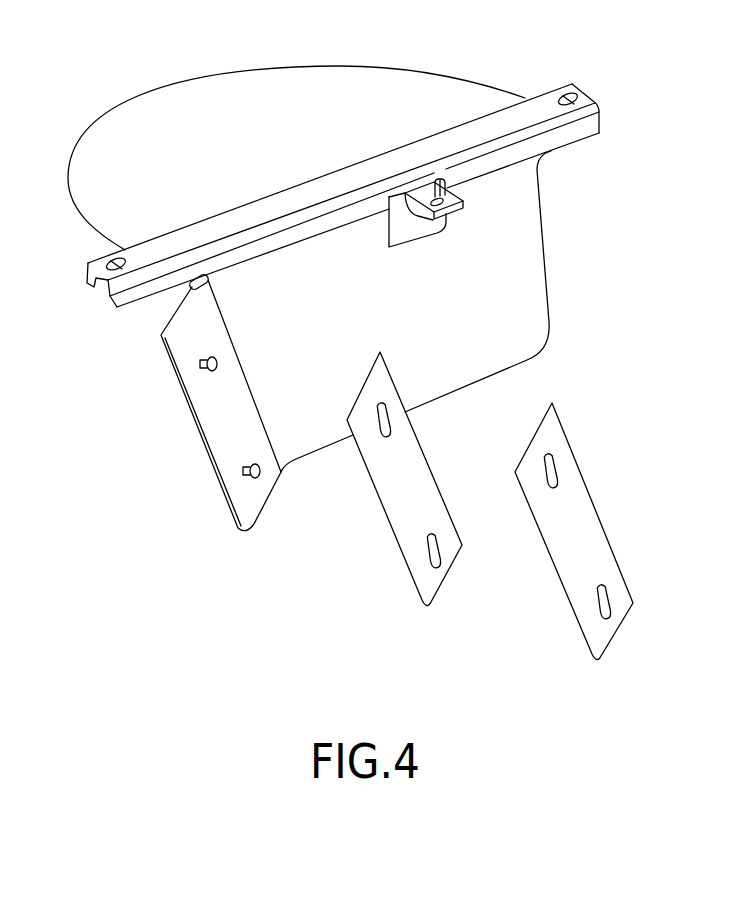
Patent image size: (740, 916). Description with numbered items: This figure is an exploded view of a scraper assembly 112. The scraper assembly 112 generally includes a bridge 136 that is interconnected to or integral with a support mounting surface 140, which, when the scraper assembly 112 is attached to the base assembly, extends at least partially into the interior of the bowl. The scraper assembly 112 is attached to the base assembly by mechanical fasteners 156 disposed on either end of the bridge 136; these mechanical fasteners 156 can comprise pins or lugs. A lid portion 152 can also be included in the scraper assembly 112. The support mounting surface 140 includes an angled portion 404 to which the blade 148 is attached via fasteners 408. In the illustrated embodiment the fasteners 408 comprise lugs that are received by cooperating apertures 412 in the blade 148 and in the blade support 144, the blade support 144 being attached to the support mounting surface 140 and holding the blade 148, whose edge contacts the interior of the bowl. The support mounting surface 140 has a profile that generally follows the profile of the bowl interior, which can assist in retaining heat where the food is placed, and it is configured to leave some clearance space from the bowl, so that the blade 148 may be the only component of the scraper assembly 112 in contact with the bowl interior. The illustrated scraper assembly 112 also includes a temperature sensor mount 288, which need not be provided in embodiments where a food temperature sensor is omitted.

The scraper assembly 112 is at (110, 81).
The lid portion 152 is at (387, 78).
The mechanical fasteners 156 is at (578, 97).
The bridge 136 is at (127, 255).
The temperature sensor mount 288 is at (463, 197).
The support mounting surface 140 is at (527, 268).
The angled portion 404 is at (215, 432).
The fasteners 408 is at (200, 363).
The blade 148 is at (397, 543).
The blade support 144 is at (578, 496).
The apertures 412 is at (385, 403).